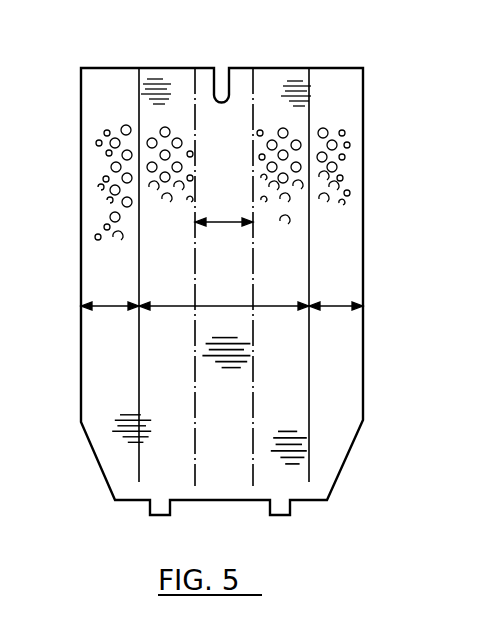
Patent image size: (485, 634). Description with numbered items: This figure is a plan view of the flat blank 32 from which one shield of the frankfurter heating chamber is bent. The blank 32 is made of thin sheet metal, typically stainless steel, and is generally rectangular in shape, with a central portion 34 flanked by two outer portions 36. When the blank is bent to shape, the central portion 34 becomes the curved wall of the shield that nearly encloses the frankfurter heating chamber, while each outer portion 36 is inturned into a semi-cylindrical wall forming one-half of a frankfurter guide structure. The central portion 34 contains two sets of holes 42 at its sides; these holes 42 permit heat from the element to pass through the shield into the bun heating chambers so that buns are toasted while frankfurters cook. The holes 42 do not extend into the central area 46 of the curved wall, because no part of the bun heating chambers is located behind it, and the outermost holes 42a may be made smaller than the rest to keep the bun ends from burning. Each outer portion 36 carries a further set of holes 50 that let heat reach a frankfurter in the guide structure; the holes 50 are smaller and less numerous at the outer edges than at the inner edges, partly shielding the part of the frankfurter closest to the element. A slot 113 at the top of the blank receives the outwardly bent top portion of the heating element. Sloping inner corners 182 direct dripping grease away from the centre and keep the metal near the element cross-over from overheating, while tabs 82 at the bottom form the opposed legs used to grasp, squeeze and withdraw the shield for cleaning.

The blank 32 is at (345, 62).
The holes 42 is at (195, 55).
The outermost holes 42a is at (255, 130).
The slot 113 is at (225, 68).
The holes 50 is at (136, 111).
The central area 46 is at (222, 220).
The outer portion 36 is at (106, 304).
The central portion 34 is at (219, 304).
The sloping inner corner 182 is at (96, 458).
The tab 82 is at (291, 506).